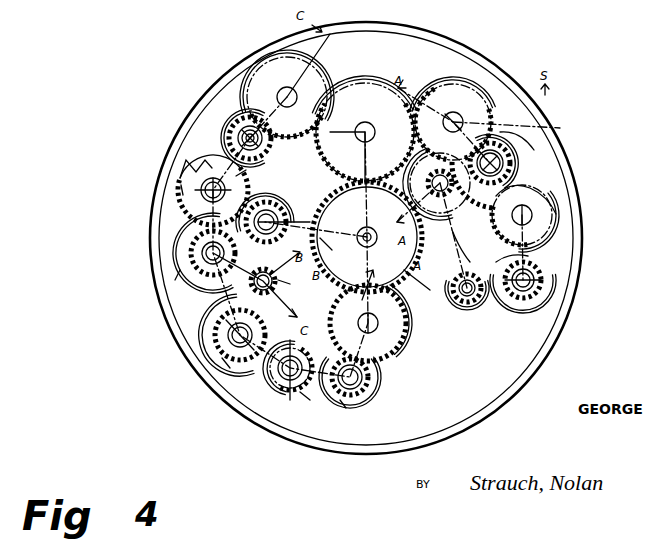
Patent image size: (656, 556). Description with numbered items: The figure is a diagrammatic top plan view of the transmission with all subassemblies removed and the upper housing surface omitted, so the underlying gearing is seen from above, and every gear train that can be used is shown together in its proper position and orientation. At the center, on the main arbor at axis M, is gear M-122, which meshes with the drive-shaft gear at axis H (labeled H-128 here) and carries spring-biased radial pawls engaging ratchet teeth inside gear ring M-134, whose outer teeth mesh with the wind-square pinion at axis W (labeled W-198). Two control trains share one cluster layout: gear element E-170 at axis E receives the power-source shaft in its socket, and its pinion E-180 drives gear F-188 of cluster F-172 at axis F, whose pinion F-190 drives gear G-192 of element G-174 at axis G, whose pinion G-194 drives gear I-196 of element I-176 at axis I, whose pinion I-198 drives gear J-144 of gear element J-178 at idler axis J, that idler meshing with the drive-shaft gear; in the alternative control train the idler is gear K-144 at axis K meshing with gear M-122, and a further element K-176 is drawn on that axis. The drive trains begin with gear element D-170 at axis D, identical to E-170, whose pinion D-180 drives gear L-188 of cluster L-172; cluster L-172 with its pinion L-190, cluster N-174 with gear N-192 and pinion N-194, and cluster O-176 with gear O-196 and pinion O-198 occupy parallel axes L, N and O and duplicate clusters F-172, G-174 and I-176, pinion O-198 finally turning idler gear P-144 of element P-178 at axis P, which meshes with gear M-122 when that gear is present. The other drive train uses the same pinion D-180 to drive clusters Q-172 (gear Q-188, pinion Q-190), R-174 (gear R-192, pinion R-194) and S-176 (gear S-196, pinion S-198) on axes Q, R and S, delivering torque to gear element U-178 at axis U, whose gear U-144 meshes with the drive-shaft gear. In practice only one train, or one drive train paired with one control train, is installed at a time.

The gear U-144 is at (266, 80).
The gear element U-178 is at (237, 85).
The gear S-196 is at (228, 115).
The gear cluster S-176 is at (205, 127).
The pinion S-198 is at (266, 132).
The ring segment for gear H H-128 is at (382, 95).
The gear element J-178 is at (480, 90).
The idler gear J-144 is at (505, 82).
The pinion I-198 is at (530, 130).
The gear element I-176 is at (546, 147).
The gear I-196 is at (540, 158).
The idler gear K-144 is at (464, 175).
The ring segment for gear K K-176 is at (470, 270).
The pinion G-194 is at (550, 182).
The gear element G-174 is at (580, 197).
The gear G-192 is at (562, 212).
The pinion F-190 is at (558, 252).
The gear cluster F-172 is at (575, 270).
The gear F-188 is at (556, 288).
The gear element E-170 is at (474, 320).
The pinion E-180 is at (480, 306).
The gear M-122 is at (368, 226).
The gear ring M-134 is at (436, 300).
The ring segment for gear W W-198 is at (282, 210).
The gear R-192 is at (178, 172).
The gear cluster R-174 is at (167, 194).
The pinion R-194 is at (238, 176).
The gear Q-188 is at (178, 248).
The gear cluster Q-172 is at (162, 262).
The pinion Q-190 is at (166, 280).
The gear element D-170 is at (330, 258).
The pinion D-180 is at (280, 282).
The gear L-188 is at (206, 352).
The gear cluster L-172 is at (207, 376).
The pinion L-190 is at (220, 380).
The pinion N-194 is at (266, 395).
The gear cluster N-174 is at (298, 426).
The gear N-192 is at (300, 400).
The gear element P-178 is at (408, 343).
The idler gear P-144 is at (400, 345).
The pinion O-198 is at (366, 378).
The gear O-196 is at (381, 400).
The gear cluster O-176 is at (367, 426).
The axis U is at (287, 97).
The axis S is at (250, 138).
The axis H is at (365, 132).
The axis J is at (453, 122).
The axis I is at (483, 175).
The axis K is at (440, 200).
The axis G is at (523, 215).
The axis F is at (520, 270).
The axis E is at (454, 275).
The axis M is at (367, 237).
The axis W is at (279, 222).
The axis R is at (213, 190).
The axis Q is at (216, 253).
The axis D is at (263, 272).
The axis L is at (228, 315).
The axis N is at (294, 358).
The axis P is at (360, 318).
The axis O is at (348, 372).